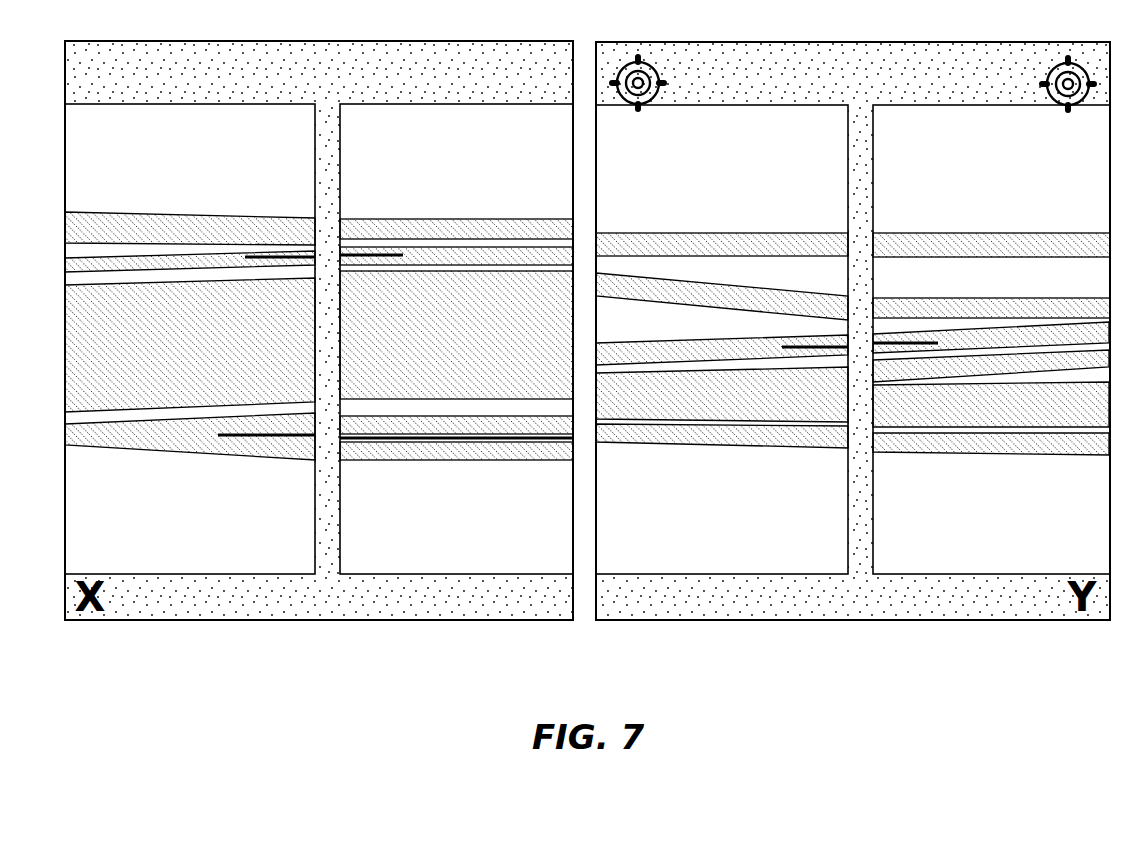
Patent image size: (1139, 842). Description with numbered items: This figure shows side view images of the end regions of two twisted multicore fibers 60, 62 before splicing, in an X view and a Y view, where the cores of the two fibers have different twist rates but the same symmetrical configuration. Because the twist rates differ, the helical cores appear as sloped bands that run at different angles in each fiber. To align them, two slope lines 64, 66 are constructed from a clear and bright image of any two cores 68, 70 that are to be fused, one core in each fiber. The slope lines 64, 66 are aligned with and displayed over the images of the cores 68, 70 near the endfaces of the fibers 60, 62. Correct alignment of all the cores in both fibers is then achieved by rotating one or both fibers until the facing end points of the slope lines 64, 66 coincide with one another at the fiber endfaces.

The multicore fiber 60 is at (120, 212).
The multicore fiber 62 is at (482, 219).
The slope line 64 is at (288, 257).
The slope line 66 is at (360, 255).
The core 68 is at (168, 272).
The core 70 is at (477, 265).